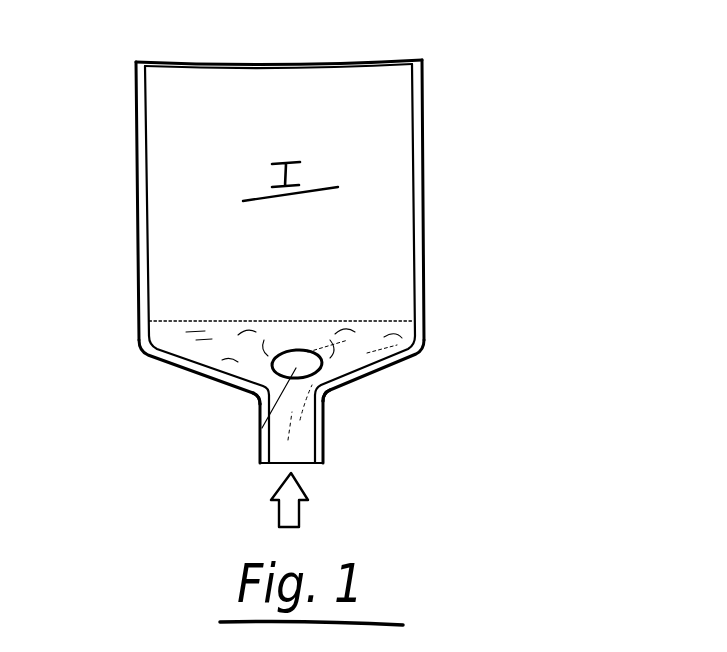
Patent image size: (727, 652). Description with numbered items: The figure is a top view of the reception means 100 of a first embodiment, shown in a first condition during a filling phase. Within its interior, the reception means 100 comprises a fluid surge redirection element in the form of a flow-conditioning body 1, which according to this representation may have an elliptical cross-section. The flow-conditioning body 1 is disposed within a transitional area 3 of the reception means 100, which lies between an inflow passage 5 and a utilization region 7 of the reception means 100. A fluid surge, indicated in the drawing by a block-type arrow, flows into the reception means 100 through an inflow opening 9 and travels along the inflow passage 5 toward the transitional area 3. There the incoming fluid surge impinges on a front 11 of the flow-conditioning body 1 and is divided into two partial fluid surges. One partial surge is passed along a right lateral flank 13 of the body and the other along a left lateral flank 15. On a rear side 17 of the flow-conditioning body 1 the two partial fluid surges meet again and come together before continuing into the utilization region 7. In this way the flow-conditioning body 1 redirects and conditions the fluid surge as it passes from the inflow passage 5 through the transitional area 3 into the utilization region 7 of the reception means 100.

The reception means 100 is at (472, 155).
The flow-conditioning body 1 is at (298, 361).
The transitional area 3 is at (352, 364).
The inflow passage 5 is at (324, 420).
The utilization region 7 is at (170, 254).
The inflow opening 9 is at (312, 457).
The front 11 is at (259, 431).
The right lateral flank 13 is at (370, 370).
The left lateral flank 15 is at (247, 375).
The rear side 17 is at (291, 350).